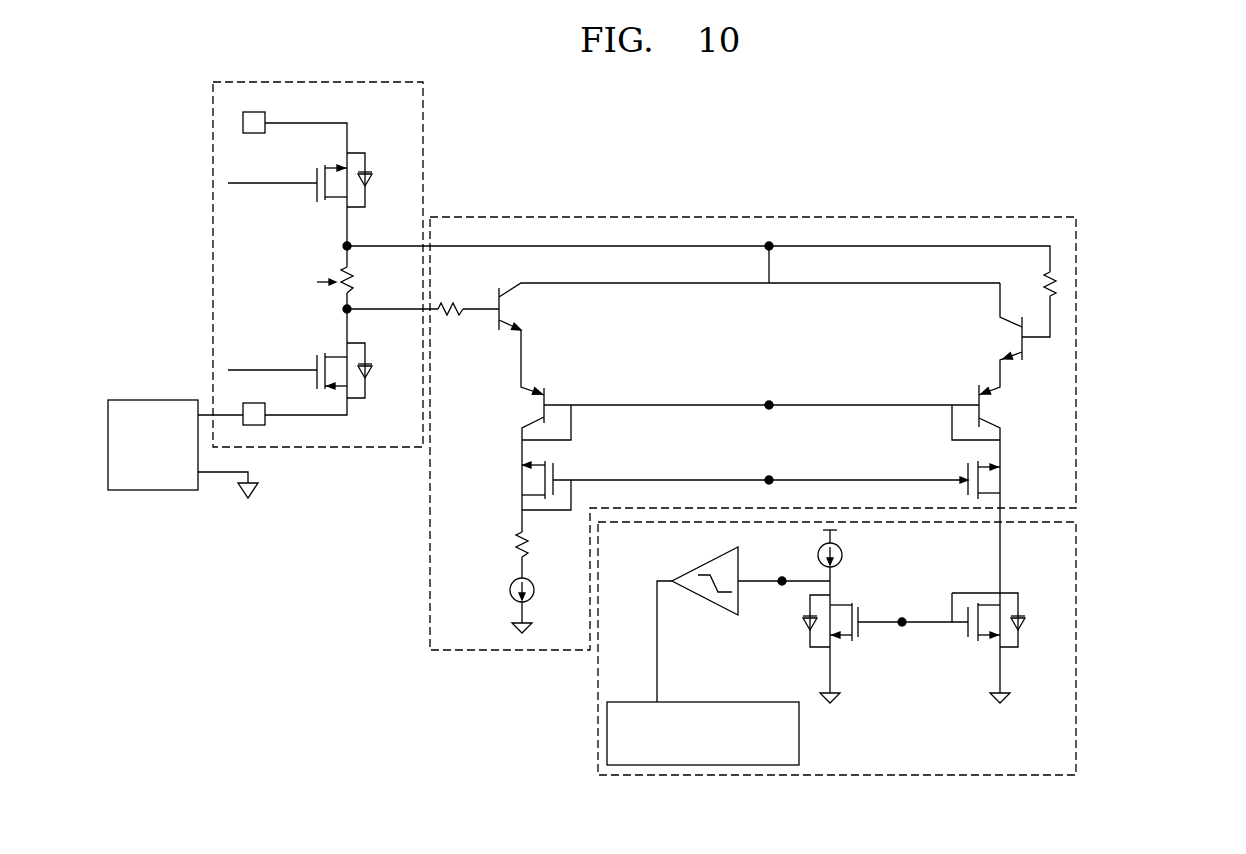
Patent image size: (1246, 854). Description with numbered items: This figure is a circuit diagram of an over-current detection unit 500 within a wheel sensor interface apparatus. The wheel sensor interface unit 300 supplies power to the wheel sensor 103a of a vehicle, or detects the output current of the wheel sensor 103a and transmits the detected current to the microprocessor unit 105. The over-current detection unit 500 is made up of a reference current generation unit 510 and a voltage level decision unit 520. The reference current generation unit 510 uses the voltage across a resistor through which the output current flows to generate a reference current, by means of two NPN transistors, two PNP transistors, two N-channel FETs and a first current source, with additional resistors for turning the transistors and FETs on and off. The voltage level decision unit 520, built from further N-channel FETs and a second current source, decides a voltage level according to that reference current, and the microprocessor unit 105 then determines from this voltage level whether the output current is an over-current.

The wheel sensor 103a is at (135, 397).
The wheel sensor interface unit 300 is at (423, 157).
The microprocessor unit 105 is at (678, 702).
The over-current detection unit 500 is at (1167, 447).
The reference current generation unit 510 is at (1076, 470).
The voltage level decision unit 520 is at (877, 648).